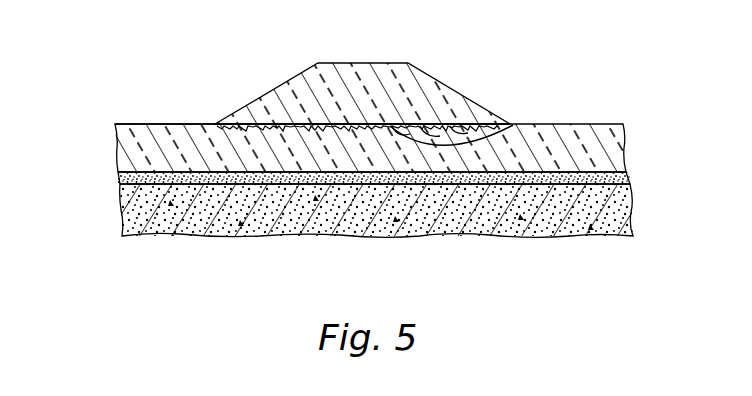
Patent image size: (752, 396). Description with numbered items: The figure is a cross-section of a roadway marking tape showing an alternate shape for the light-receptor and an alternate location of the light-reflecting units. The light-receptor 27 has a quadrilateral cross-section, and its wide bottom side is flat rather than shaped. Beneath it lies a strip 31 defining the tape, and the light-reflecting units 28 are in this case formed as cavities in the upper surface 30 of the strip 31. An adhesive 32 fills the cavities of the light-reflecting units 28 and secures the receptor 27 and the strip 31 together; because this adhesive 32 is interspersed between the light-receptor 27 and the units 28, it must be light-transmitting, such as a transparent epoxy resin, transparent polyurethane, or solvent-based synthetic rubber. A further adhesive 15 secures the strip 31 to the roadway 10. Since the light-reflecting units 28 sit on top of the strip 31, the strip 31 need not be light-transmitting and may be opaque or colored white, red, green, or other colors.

The roadway 10 is at (610, 228).
The adhesive 15 is at (620, 178).
The light-receptor 27 is at (438, 82).
The light-reflecting units 28 is at (508, 123).
The upper surface 30 is at (153, 124).
The strip 31 is at (614, 148).
The adhesive 32 is at (303, 125).